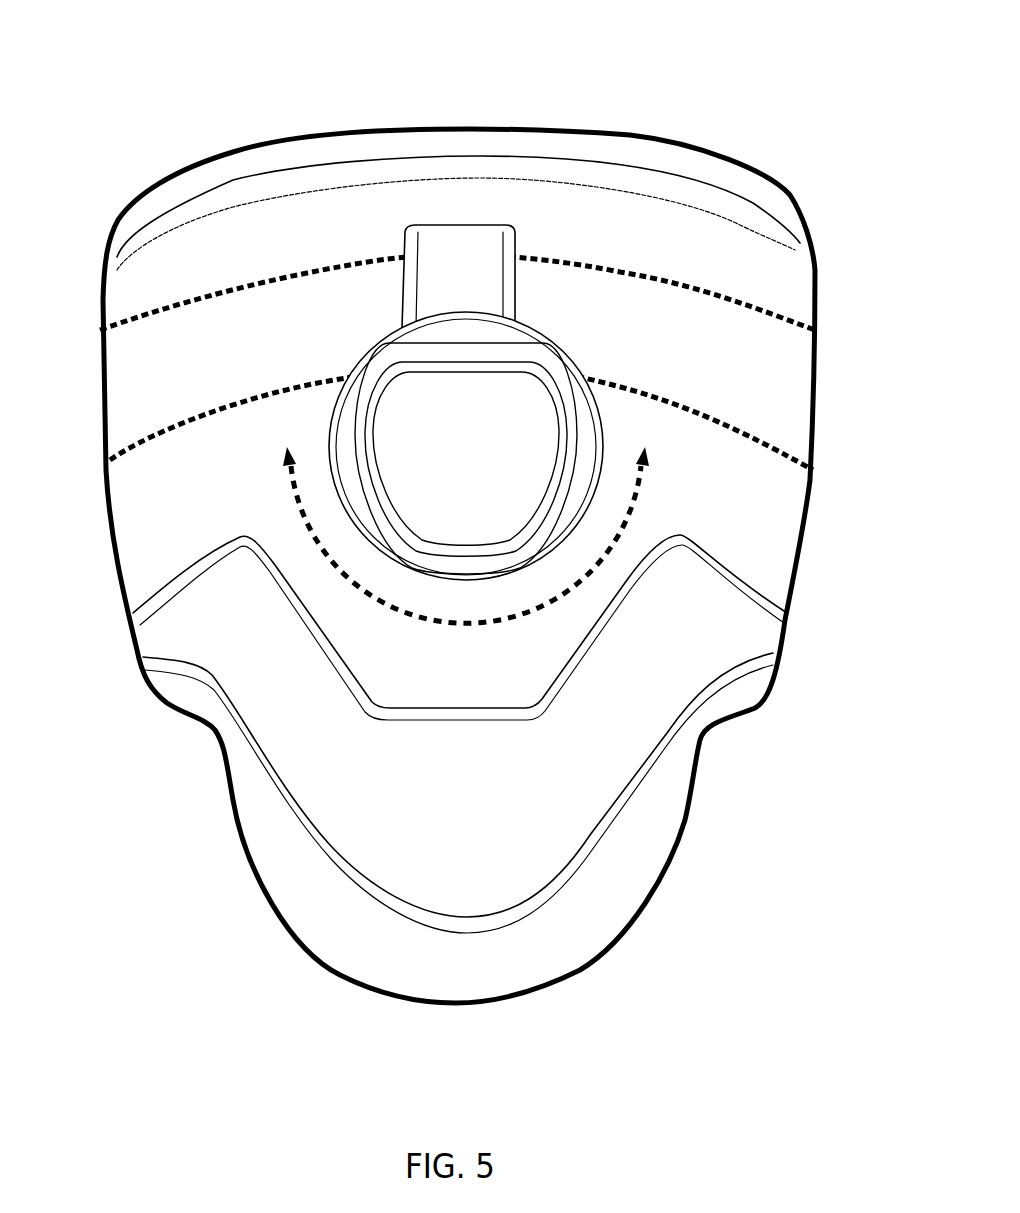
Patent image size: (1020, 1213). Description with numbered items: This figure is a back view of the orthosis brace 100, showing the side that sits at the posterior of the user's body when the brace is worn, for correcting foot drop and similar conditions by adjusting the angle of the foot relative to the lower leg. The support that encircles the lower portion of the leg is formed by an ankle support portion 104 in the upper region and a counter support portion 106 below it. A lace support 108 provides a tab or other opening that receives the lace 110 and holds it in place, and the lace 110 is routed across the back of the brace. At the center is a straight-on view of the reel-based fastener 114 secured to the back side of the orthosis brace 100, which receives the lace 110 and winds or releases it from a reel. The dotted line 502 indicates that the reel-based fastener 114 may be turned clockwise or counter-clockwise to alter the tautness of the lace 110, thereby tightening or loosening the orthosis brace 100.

The orthosis brace 100 is at (200, 62).
The ankle support portion 104 is at (776, 372).
The counter support portion 106 is at (588, 932).
The lace supports 108 is at (442, 288).
The lace 110 is at (127, 292).
The reel-based fastener 114 is at (473, 398).
The dotted line 502 is at (463, 633).